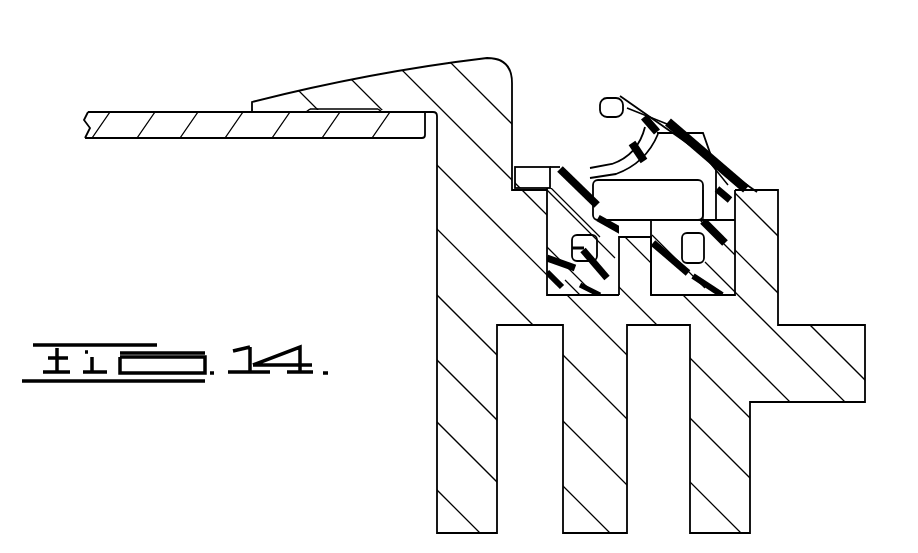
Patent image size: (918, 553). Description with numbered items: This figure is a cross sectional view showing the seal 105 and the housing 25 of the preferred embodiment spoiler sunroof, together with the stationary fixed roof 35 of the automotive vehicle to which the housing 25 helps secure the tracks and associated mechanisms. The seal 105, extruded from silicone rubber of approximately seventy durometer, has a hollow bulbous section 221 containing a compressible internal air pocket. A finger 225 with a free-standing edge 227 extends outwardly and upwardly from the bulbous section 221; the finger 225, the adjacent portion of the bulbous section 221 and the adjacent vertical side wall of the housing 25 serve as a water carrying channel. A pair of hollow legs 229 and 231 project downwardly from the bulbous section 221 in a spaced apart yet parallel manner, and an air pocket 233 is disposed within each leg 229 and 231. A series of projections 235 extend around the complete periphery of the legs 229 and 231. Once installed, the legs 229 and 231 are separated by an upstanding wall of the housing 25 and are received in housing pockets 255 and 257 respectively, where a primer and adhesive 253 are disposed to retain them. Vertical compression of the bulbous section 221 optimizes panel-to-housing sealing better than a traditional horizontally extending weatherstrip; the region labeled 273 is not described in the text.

The stationary fixed roof 35 is at (134, 124).
The housing 25 is at (447, 188).
The seal 105 is at (742, 126).
The bulbous section 221 is at (622, 158).
The finger 225 is at (668, 106).
The free-standing edge 227 is at (609, 98).
The leg 229 is at (560, 275).
The leg 231 is at (730, 252).
The air pocket 233 is at (560, 245).
The projections 235 is at (716, 280).
The primer and adhesive 253 is at (551, 187).
The housing pocket 255 is at (552, 283).
The housing pocket 257 is at (730, 289).
The clip bridge 273 is at (686, 182).